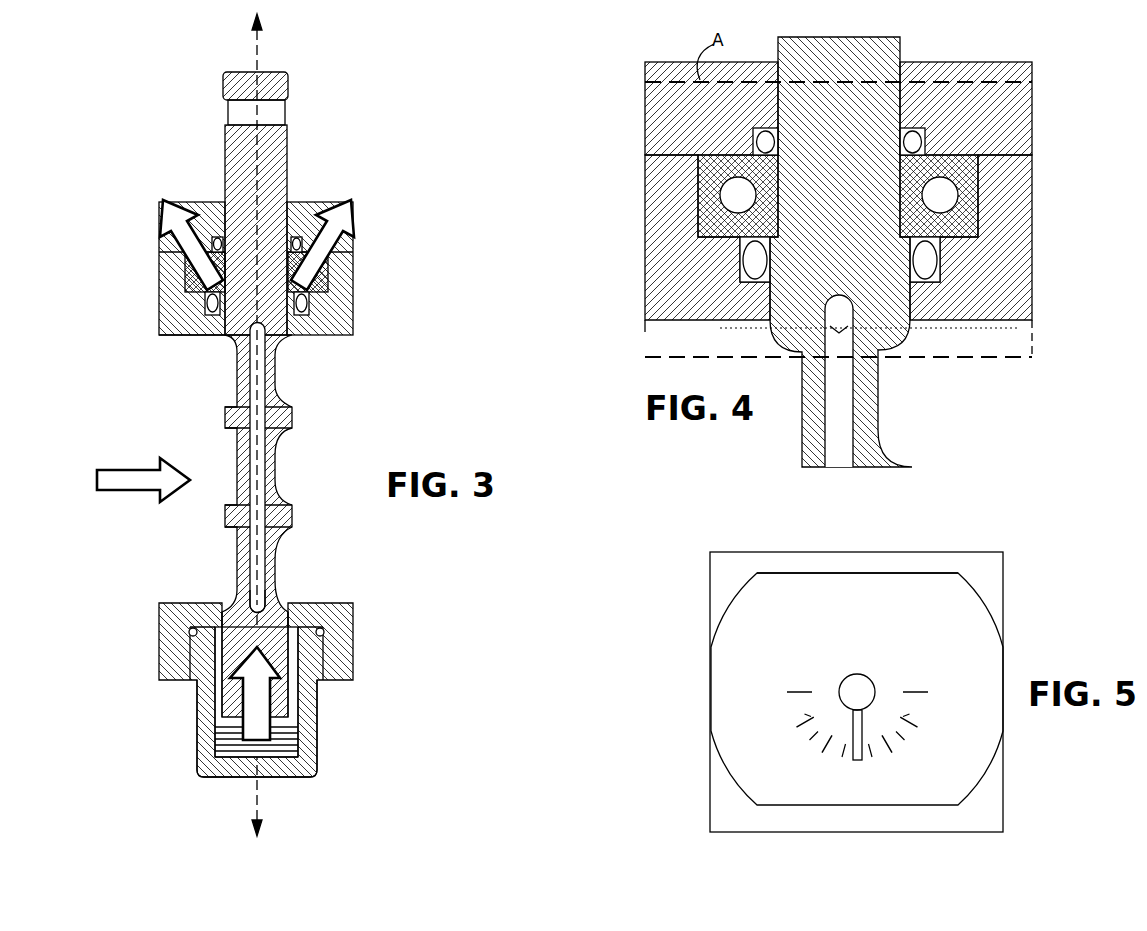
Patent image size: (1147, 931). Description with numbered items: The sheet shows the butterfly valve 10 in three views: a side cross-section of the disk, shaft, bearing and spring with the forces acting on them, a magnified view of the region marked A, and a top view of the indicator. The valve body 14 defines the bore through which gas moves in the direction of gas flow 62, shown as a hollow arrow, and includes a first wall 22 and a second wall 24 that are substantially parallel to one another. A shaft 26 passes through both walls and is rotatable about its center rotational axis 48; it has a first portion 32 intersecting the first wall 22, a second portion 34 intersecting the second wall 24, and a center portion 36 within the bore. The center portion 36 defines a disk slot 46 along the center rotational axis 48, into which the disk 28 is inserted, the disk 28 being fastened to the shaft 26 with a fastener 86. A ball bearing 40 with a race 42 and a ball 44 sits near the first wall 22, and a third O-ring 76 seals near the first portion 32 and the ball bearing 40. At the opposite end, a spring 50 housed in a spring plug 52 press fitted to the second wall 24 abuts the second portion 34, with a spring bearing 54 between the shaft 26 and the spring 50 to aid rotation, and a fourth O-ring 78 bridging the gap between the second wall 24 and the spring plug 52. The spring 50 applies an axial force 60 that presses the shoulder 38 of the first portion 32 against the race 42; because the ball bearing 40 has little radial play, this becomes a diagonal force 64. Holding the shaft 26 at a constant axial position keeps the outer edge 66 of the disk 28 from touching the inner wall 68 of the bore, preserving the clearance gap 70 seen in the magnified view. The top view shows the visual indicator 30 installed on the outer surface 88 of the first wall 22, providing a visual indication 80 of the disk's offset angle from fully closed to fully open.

In FIG. 5, the butterfly valve 10 is at (679, 622).
In FIG. 4, the valve body 14 is at (1003, 300).
In FIG. 5, the valve body 14 is at (710, 830).
In FIG. 3, the first wall 22 is at (160, 293).
In FIG. 3, the second wall 24 is at (354, 648).
In FIG. 3, the shaft 26 is at (246, 192).
In FIG. 5, the shaft 26 is at (858, 690).
In FIG. 3, the disk 28 is at (268, 488).
In FIG. 4, the disk 28 is at (840, 410).
In FIG. 3, the visual indicator 30 is at (300, 210).
In FIG. 5, the visual indicator 30 is at (947, 655).
In FIG. 3, the first portion 32 is at (268, 222).
In FIG. 3, the second portion 34 is at (313, 632).
In FIG. 3, the center portion 36 is at (283, 445).
In FIG. 3, the shoulder 38 is at (304, 303).
In FIG. 3, the ball bearing 40 is at (315, 290).
In FIG. 3, the race 42 is at (192, 280).
In FIG. 3, the ball 44 is at (193, 300).
In FIG. 3, the disk slot 46 is at (265, 585).
In FIG. 3, the center rotational axis 48 is at (250, 818).
In FIG. 3, the spring 50 is at (290, 752).
In FIG. 3, the spring plug 52 is at (200, 762).
In FIG. 3, the spring bearing 54 is at (232, 716).
In FIG. 3, the axial force 60 is at (243, 738).
In FIG. 3, the direction of gas flow 62 is at (97, 488).
In FIG. 3, the diagonal force 64 is at (162, 212).
In FIG. 3, the outer edge 66 is at (266, 342).
In FIG. 4, the outer edge 66 is at (840, 332).
In FIG. 3, the inner wall 68 is at (178, 337).
In FIG. 4, the inner wall 68 is at (690, 320).
In FIG. 4, the clearance gap 70 is at (948, 329).
In FIG. 3, the third O-ring 76 is at (210, 314).
In FIG. 3, the fourth O-ring 78 is at (190, 640).
In FIG. 5, the visual indication 80 is at (873, 765).
In FIG. 3, the fastener 86 is at (237, 410).
In FIG. 5, the outer surface 88 is at (733, 568).